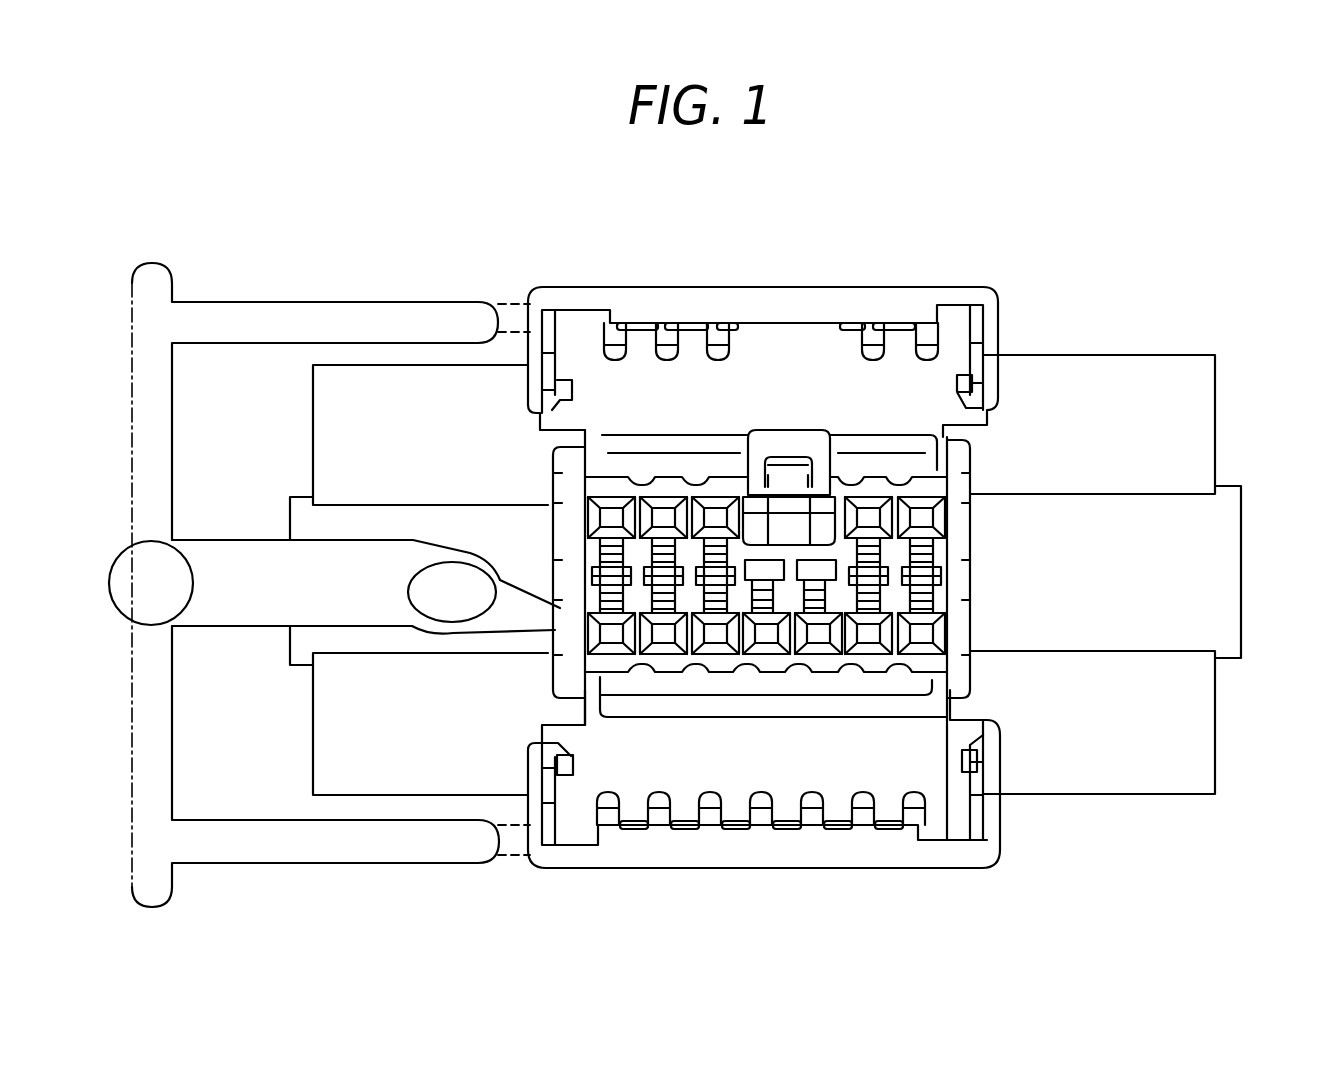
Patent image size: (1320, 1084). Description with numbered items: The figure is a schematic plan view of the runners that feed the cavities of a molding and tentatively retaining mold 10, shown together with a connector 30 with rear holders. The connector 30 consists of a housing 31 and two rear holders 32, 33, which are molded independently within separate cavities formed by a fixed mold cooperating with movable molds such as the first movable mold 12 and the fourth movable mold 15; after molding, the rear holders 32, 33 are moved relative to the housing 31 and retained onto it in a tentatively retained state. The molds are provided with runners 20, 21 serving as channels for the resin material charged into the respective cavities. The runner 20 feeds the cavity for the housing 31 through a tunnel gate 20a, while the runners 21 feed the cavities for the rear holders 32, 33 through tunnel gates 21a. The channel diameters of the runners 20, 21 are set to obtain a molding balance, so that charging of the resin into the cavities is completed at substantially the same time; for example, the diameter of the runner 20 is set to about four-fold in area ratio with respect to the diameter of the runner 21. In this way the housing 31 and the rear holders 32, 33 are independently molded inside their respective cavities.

The molding and tentatively retaining mold 10 is at (683, 260).
The first movable mold 12 is at (1127, 375).
The fourth movable mold 15 is at (1197, 564).
The runner 20 is at (240, 540).
The tunnel gate 20a is at (513, 618).
The runner 21 is at (383, 303).
The tunnel gate 21a is at (512, 302).
The connector with rear holders 30 is at (805, 284).
The housing 31 is at (955, 455).
The rear holder 32 is at (897, 293).
The rear holder 33 is at (892, 850).